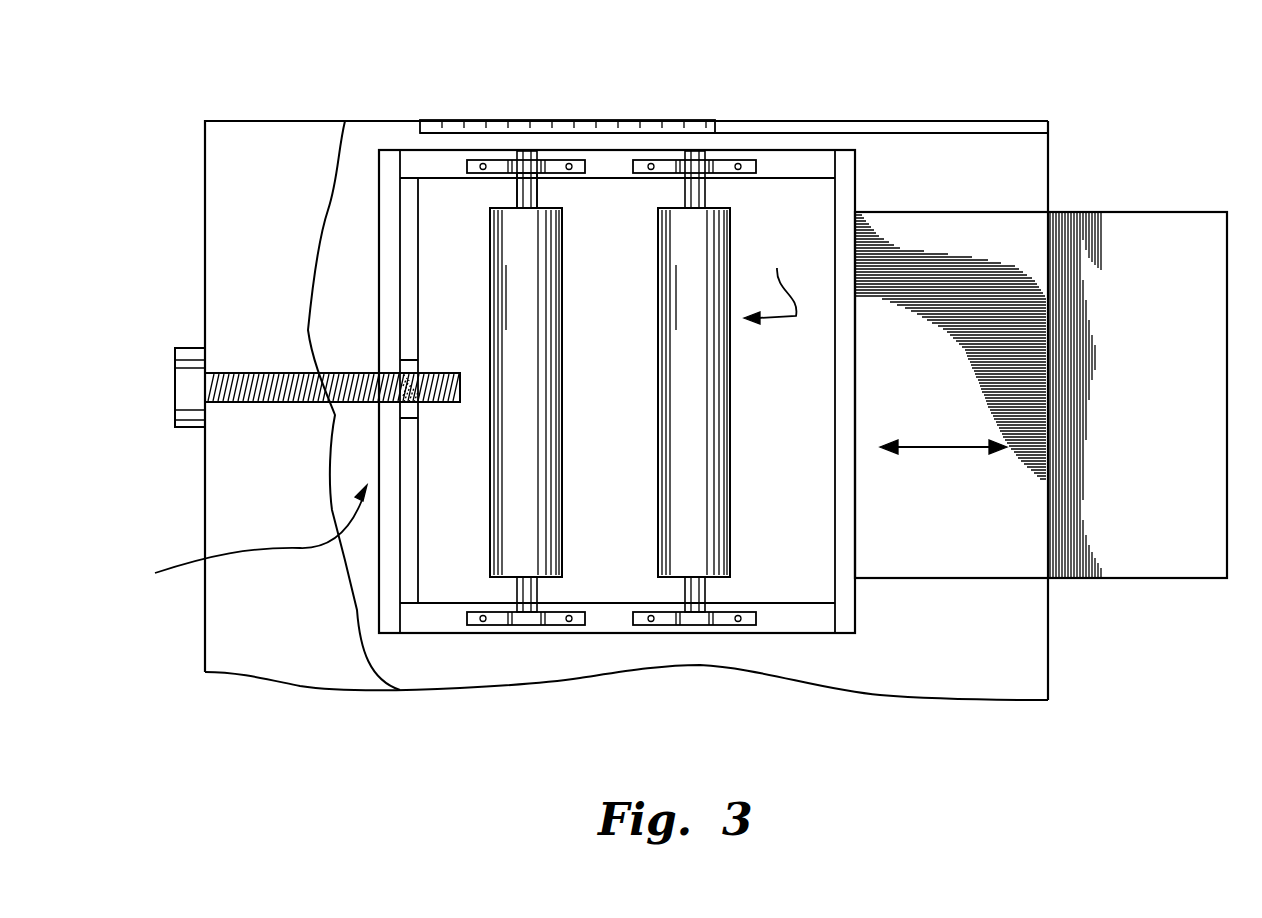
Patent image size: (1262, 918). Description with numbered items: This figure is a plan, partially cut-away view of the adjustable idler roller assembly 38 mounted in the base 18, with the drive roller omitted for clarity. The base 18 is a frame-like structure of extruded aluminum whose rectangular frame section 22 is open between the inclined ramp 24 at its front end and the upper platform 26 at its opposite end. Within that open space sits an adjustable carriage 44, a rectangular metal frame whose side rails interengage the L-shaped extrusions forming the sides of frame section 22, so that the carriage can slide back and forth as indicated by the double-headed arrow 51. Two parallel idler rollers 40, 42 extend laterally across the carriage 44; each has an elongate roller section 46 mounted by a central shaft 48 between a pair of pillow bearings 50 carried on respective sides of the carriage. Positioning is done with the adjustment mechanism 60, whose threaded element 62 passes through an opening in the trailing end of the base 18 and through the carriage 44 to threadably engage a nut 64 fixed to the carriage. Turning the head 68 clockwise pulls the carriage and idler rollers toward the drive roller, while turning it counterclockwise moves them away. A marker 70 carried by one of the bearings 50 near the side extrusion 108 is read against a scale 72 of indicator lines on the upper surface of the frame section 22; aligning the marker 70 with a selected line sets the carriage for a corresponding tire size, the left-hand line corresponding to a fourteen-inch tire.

The base 18 is at (205, 183).
The frame section 22 is at (948, 132).
The inclined ramp 24 is at (1180, 212).
The upper platform 26 is at (300, 160).
The idler roller assembly 38 is at (771, 279).
The idler roller 40 is at (705, 463).
The idler roller 42 is at (528, 520).
The adjustable carriage 44 is at (378, 250).
The elongate roller section 46 is at (562, 295).
The central shaft 48 is at (516, 190).
The pillow bearings 50 is at (483, 160).
The double-headed arrow 51 is at (947, 449).
The adjustment mechanism 60 is at (239, 538).
The threaded element 62 is at (250, 405).
The nut 64 is at (410, 360).
The head 68 is at (185, 348).
The marker 70 is at (528, 152).
The scale 72 is at (625, 120).
The side extrusion 108 is at (865, 120).